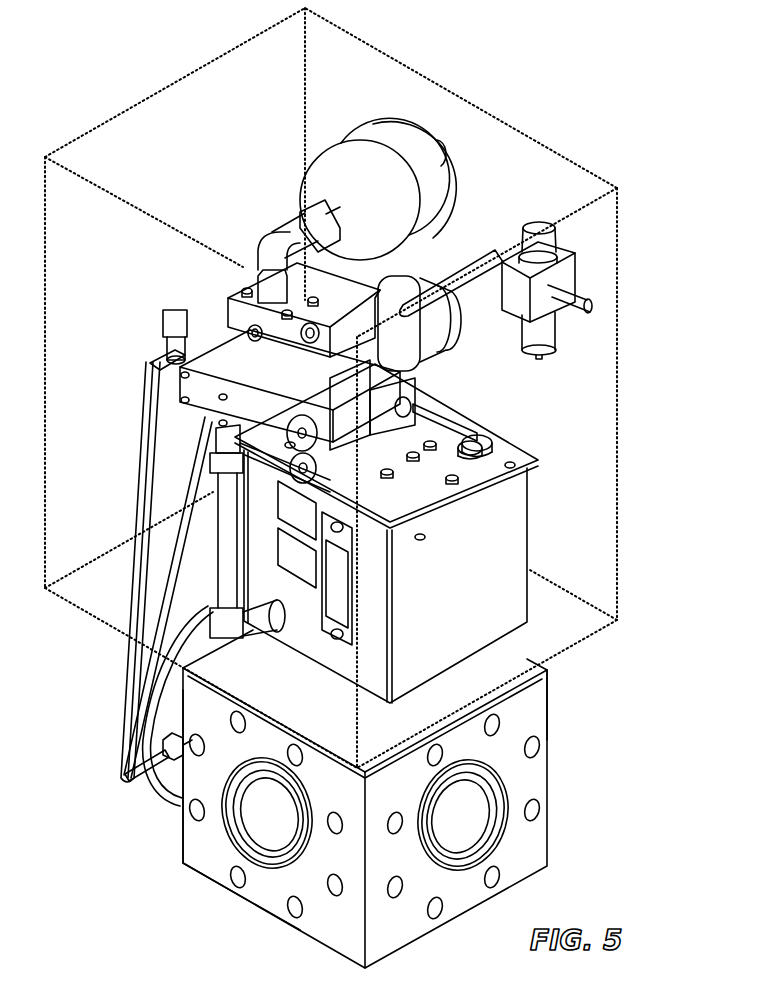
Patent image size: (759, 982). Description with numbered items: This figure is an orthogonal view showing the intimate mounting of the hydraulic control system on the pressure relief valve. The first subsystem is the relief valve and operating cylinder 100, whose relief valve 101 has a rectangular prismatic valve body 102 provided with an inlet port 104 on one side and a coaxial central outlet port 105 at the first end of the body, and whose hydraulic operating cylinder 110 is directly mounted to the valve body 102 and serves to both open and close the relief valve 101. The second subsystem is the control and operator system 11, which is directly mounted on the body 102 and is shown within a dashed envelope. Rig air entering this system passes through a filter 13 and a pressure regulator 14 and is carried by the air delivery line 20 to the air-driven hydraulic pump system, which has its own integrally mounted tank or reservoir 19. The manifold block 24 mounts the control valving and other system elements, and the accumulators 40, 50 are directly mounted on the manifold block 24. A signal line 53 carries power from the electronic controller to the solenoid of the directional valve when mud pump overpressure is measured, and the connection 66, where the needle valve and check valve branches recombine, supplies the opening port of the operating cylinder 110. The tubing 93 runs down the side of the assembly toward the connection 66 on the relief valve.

The control and operator system 11 is at (165, 90).
The filter 13 is at (598, 290).
The pressure regulator 14 is at (577, 275).
The tank or reservoir 19 is at (530, 525).
The air delivery line 20 is at (483, 250).
The manifold block 24 is at (188, 385).
The accumulator 40 is at (422, 128).
The accumulator 50 is at (470, 243).
The signal line 53 is at (445, 420).
The connection 66 is at (128, 768).
The pipe 93 is at (140, 478).
The relief valve and operating cylinder 100 is at (375, 799).
The relief valve 101 is at (548, 708).
The valve body 102 is at (207, 880).
The inlet port 104 is at (257, 818).
The central outlet port 105 is at (475, 828).
The hydraulic operating cylinder 110 is at (175, 780).